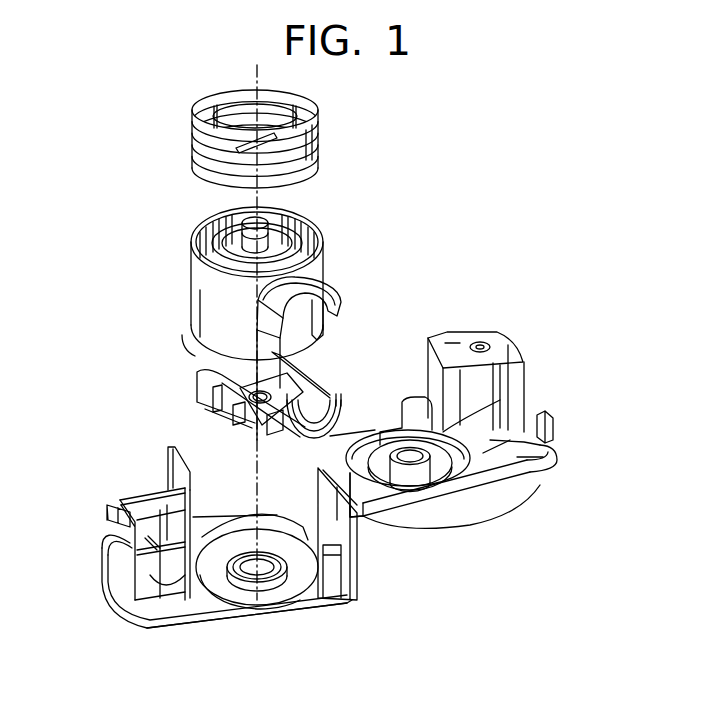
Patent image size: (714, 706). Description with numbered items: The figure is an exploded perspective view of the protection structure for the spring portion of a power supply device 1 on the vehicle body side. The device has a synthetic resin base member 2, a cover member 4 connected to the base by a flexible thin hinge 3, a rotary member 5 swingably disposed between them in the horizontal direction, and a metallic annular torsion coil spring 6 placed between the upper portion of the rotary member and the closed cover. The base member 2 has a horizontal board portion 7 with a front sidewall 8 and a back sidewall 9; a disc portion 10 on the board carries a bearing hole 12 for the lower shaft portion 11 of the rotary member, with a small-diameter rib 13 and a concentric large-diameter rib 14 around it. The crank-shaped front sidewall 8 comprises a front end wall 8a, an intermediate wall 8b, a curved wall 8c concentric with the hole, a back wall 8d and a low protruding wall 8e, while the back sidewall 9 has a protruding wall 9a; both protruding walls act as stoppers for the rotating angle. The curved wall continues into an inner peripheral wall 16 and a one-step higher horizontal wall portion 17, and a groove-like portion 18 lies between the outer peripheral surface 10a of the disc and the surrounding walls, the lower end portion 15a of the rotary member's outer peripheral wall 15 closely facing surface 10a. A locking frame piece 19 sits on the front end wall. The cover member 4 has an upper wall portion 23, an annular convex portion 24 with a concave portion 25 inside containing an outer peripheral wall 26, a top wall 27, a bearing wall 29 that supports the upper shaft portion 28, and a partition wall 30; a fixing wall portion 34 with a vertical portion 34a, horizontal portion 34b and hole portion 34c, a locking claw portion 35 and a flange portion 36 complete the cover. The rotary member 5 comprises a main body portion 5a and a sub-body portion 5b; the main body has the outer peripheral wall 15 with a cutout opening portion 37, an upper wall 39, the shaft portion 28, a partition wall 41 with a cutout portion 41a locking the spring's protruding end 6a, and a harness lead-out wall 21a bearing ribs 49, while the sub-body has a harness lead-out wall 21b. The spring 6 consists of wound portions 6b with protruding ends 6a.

The power supply device 1 is at (566, 141).
The base member 2 is at (355, 590).
The thin hinge 3 is at (355, 508).
The cover member 4 is at (477, 396).
The rotary member 5 is at (347, 358).
The main body portion 5a is at (342, 290).
The sub-body portion 5b is at (338, 378).
The torsion coil spring 6 is at (335, 147).
The protruding end 6a is at (262, 138).
The wound portions 6b is at (318, 138).
The board portion 7 is at (203, 622).
The front sidewall 8 is at (121, 494).
The front end wall 8a is at (110, 548).
The intermediate wall 8b is at (160, 520).
The curved wall 8c is at (195, 492).
The back wall 8d is at (172, 458).
The protruding wall 8e is at (165, 605).
The back sidewall 9 is at (357, 550).
The protruding wall 9a is at (341, 590).
The disc portion 10 is at (300, 585).
The outer peripheral surface 10a is at (226, 605).
The lower shaft portion 11 is at (325, 372).
The bearing hole 12 is at (258, 578).
The small-diameter rib 13 is at (268, 580).
The large-diameter rib 14 is at (285, 578).
The outer peripheral wall 15 is at (190, 290).
The lower end portion 15a is at (182, 345).
The inner peripheral wall 16 is at (245, 518).
The horizontal wall portion 17 is at (223, 520).
The groove-like portion 18 is at (293, 518).
The locking frame piece 19 is at (107, 512).
The harness lead-out wall 21a is at (350, 285).
The harness lead-out wall 21b is at (418, 390).
The upper wall portion 23 is at (545, 465).
The convex portion 24 is at (455, 522).
The concave portion 25 is at (460, 445).
The outer peripheral wall 26 is at (362, 446).
The top wall 27 is at (483, 453).
The upper shaft portion 28 is at (268, 220).
The bearing wall 29 is at (426, 395).
The partition wall 30 is at (460, 395).
The fixing wall portion 34 is at (527, 378).
The vertical portion 34a is at (510, 342).
The horizontal portion 34b is at (452, 340).
The hole portion 34c is at (481, 342).
The locking claw portion 35 is at (555, 420).
The flange portion 36 is at (550, 462).
The cutout opening portion 37 is at (318, 343).
The upper wall 39 is at (205, 238).
The partition wall 41 is at (292, 238).
The cutout portion 41a is at (228, 225).
The ribs 49 is at (445, 445).